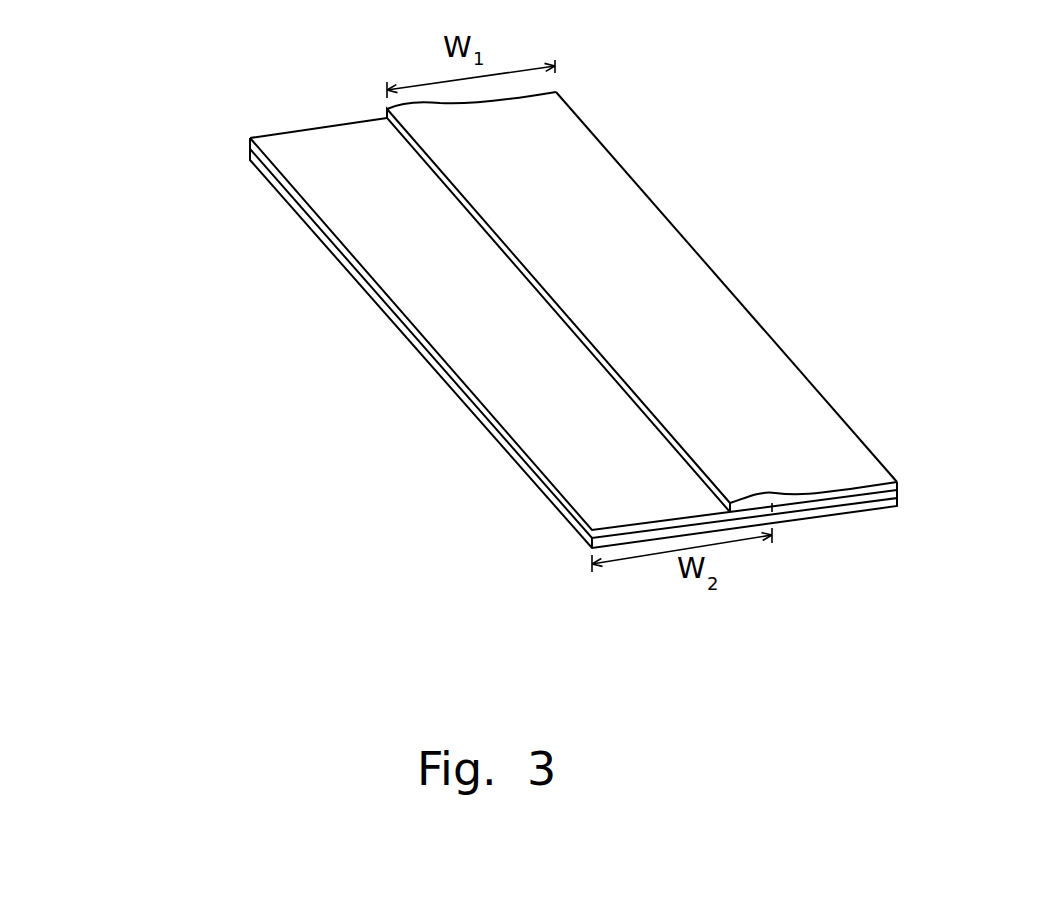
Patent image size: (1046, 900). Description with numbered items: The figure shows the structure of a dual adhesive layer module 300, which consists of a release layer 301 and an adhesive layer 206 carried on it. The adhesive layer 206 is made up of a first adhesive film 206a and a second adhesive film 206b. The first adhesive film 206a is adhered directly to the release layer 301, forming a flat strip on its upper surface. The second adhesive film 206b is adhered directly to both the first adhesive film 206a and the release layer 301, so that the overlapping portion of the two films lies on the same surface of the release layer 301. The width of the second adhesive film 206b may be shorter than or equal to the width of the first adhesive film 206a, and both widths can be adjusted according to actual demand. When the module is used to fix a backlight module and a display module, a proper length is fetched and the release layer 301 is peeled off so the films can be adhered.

The dual adhesive layer module 300 is at (130, 351).
The adhesive layer 206 is at (220, 276).
The first adhesive film 206a is at (535, 404).
The second adhesive film 206b is at (577, 238).
The release layer 301 is at (537, 485).